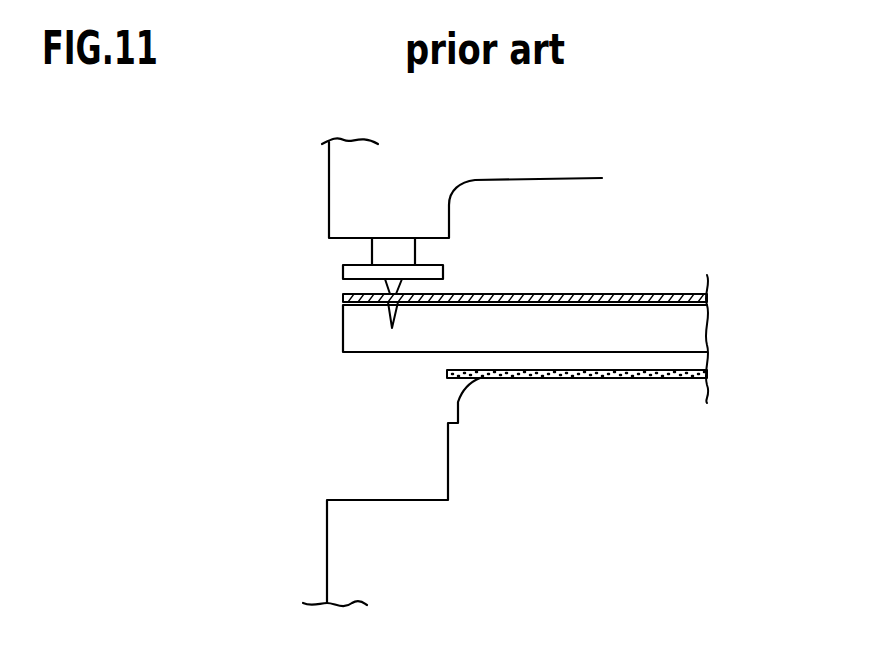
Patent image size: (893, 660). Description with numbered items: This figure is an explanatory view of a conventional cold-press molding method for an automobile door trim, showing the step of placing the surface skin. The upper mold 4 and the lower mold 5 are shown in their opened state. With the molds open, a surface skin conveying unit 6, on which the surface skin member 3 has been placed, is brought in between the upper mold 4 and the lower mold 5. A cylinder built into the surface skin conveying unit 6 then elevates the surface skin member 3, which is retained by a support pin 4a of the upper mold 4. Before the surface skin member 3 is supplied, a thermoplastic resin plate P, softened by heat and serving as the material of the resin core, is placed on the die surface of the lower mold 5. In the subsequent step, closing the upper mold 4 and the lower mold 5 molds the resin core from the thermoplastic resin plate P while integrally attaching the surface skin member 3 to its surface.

The upper mold 4 is at (352, 181).
The support pin 4a is at (400, 290).
The surface skin member 3 is at (640, 294).
The surface skin conveying unit 6 is at (358, 333).
The thermoplastic resin plate P is at (593, 378).
The lower mold 5 is at (340, 563).